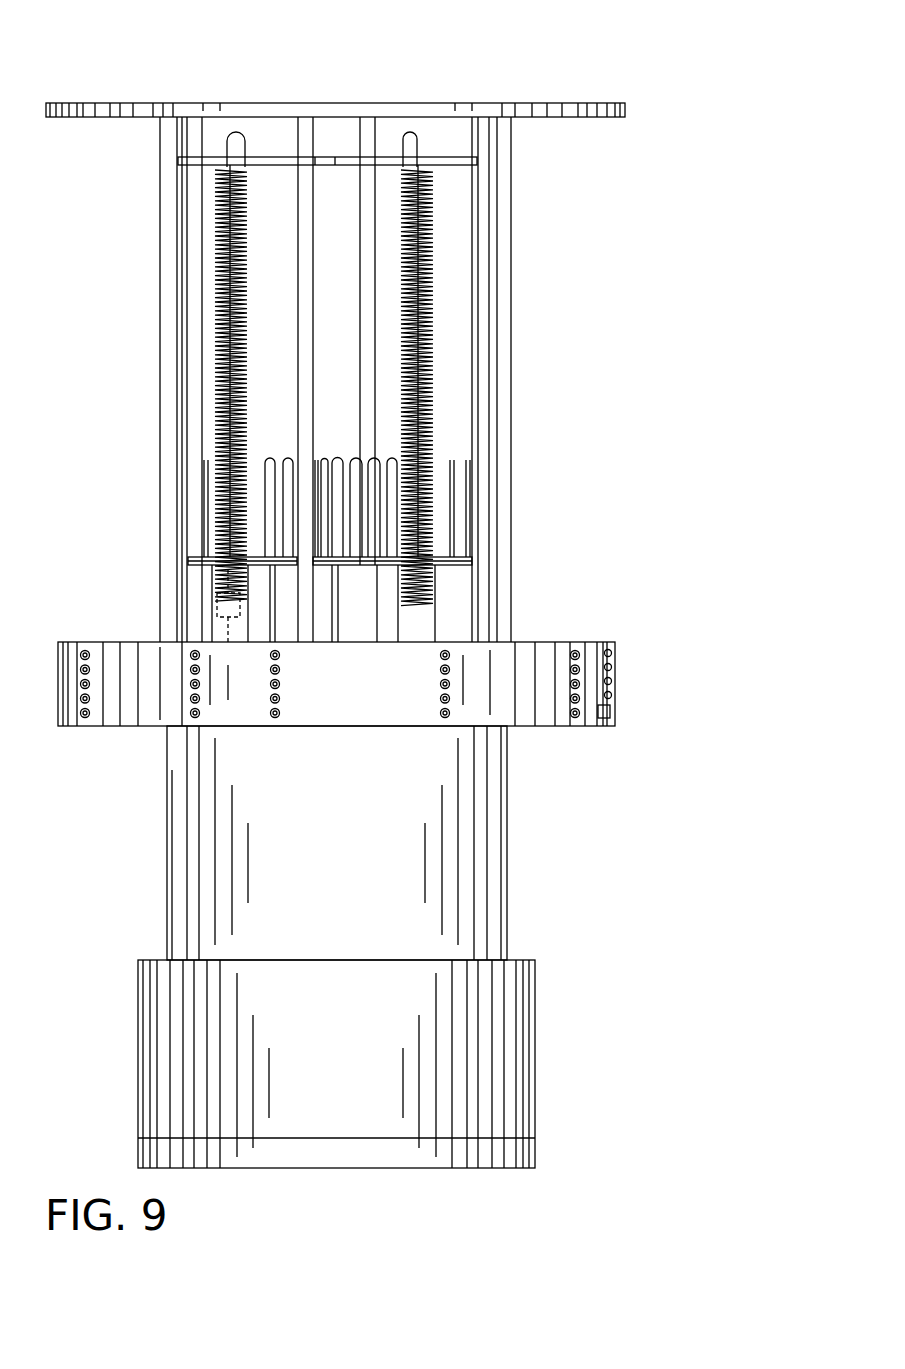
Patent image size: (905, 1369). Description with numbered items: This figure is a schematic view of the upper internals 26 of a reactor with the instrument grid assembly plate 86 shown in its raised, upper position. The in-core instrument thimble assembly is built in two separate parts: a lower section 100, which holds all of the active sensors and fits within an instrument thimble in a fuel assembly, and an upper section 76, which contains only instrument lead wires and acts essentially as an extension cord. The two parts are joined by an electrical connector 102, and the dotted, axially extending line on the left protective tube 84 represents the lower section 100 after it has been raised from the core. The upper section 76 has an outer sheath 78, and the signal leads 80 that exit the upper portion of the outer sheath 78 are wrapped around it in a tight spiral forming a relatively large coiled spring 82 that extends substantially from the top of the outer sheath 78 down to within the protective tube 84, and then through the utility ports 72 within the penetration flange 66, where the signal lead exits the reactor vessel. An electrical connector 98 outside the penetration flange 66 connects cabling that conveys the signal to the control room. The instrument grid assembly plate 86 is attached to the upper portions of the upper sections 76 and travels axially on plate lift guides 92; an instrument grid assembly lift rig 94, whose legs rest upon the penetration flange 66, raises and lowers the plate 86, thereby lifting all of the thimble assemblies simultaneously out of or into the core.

The upper internals 26 is at (522, 880).
The penetration flange 66 is at (540, 642).
The utility ports 72 is at (613, 695).
The upper section 76 is at (448, 270).
The outer sheath 78 is at (432, 200).
The signal leads 80 is at (418, 137).
The coiled spring 82 is at (432, 383).
The protective tube 84 is at (475, 597).
The instrument grid assembly plate 86 is at (180, 157).
The plate lift guides 92 is at (188, 350).
The instrument grid assembly lift rig 94 is at (621, 103).
The electrical connector 98 is at (605, 720).
The lower section 100 is at (228, 633).
The electrical connector 102 is at (215, 600).